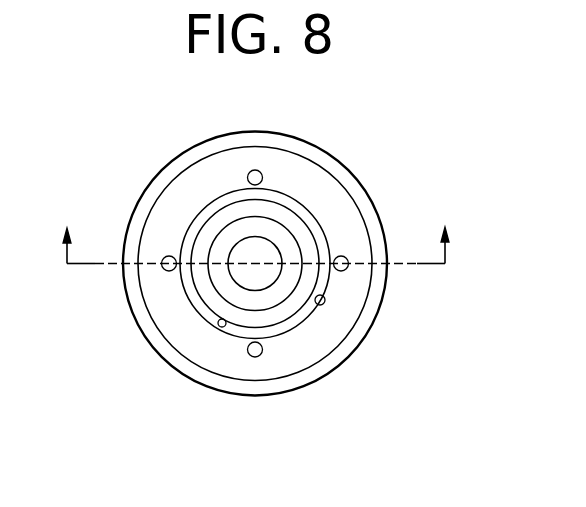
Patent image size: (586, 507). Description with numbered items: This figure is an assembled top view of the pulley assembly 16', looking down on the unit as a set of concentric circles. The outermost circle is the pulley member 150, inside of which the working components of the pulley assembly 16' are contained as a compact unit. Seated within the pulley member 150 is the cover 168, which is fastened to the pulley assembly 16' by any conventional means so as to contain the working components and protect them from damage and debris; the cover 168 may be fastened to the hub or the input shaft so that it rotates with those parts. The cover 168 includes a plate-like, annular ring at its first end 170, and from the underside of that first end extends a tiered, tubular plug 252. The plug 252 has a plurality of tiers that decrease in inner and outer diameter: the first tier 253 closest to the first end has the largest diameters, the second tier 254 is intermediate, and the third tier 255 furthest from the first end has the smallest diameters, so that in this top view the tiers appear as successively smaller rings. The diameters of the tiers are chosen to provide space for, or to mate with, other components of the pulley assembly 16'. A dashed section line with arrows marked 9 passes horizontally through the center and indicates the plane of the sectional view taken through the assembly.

The pulley assembly 16' is at (327, 227).
The pulley member 150 is at (373, 215).
The cover 168 is at (327, 200).
The first end 170 is at (163, 217).
The tiered tubular plug 252 is at (325, 298).
The first tier 253 is at (219, 327).
The second tier 254 is at (198, 300).
The third tier 255 is at (273, 300).
The section line 9- 9 is at (261, 245).